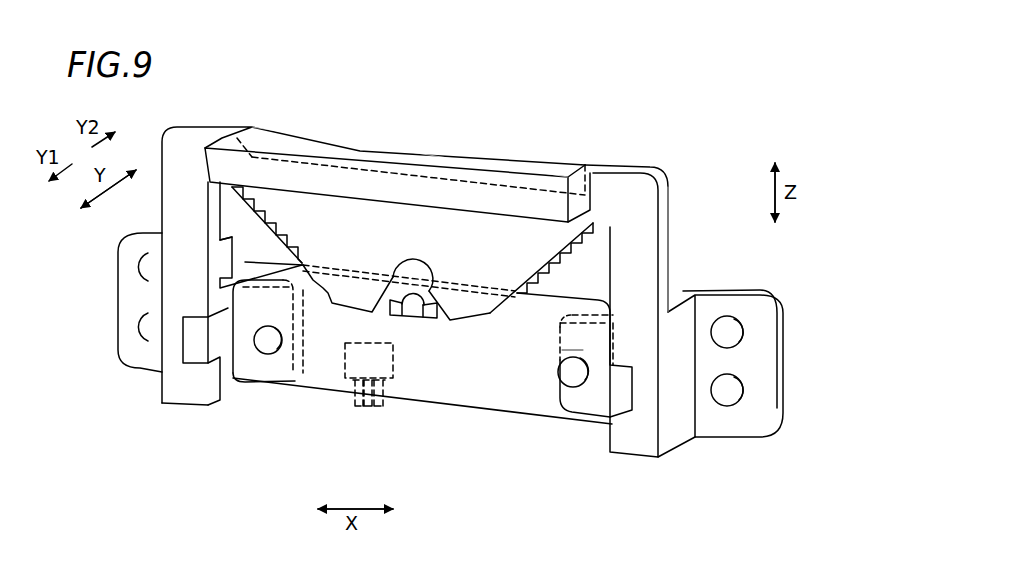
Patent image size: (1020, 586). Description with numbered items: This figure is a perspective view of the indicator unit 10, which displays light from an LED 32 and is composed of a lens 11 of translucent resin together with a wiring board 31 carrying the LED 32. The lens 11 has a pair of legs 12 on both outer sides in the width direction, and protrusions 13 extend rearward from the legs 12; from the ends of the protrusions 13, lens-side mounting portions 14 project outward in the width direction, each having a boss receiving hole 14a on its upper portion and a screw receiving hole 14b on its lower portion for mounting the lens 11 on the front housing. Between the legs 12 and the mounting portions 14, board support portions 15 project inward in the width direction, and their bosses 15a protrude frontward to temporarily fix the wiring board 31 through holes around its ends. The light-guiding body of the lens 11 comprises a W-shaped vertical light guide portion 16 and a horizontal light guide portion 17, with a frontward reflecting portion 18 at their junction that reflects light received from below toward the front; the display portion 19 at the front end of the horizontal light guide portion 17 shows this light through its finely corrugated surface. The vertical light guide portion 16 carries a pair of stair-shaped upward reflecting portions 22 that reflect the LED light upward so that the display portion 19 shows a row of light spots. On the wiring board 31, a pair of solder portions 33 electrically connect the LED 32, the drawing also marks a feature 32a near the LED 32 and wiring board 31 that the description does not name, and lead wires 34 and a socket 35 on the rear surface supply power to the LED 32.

The indicator unit 10 is at (163, 440).
The lens 11 is at (608, 152).
The legs 12 is at (190, 223).
The protrusions 13 is at (677, 423).
The lens-side mounting portions 14 is at (137, 357).
The boss receiving holes 14a is at (718, 335).
The screw receiving holes 14b is at (723, 398).
The board support portions 15 is at (233, 373).
The bosses 15a is at (267, 352).
The vertical light guide portion 16 is at (447, 247).
The horizontal light guide portion 17 is at (535, 180).
The frontward reflecting portion 18 is at (370, 163).
The display portion 19 is at (397, 187).
The upward reflecting portions 22 is at (273, 217).
The wiring board 31 is at (477, 380).
The LED 32 is at (414, 318).
The engaging hole 32a is at (287, 327).
The solder portions 33 is at (393, 276).
The lead wires 34 is at (353, 400).
The socket 35 is at (393, 400).